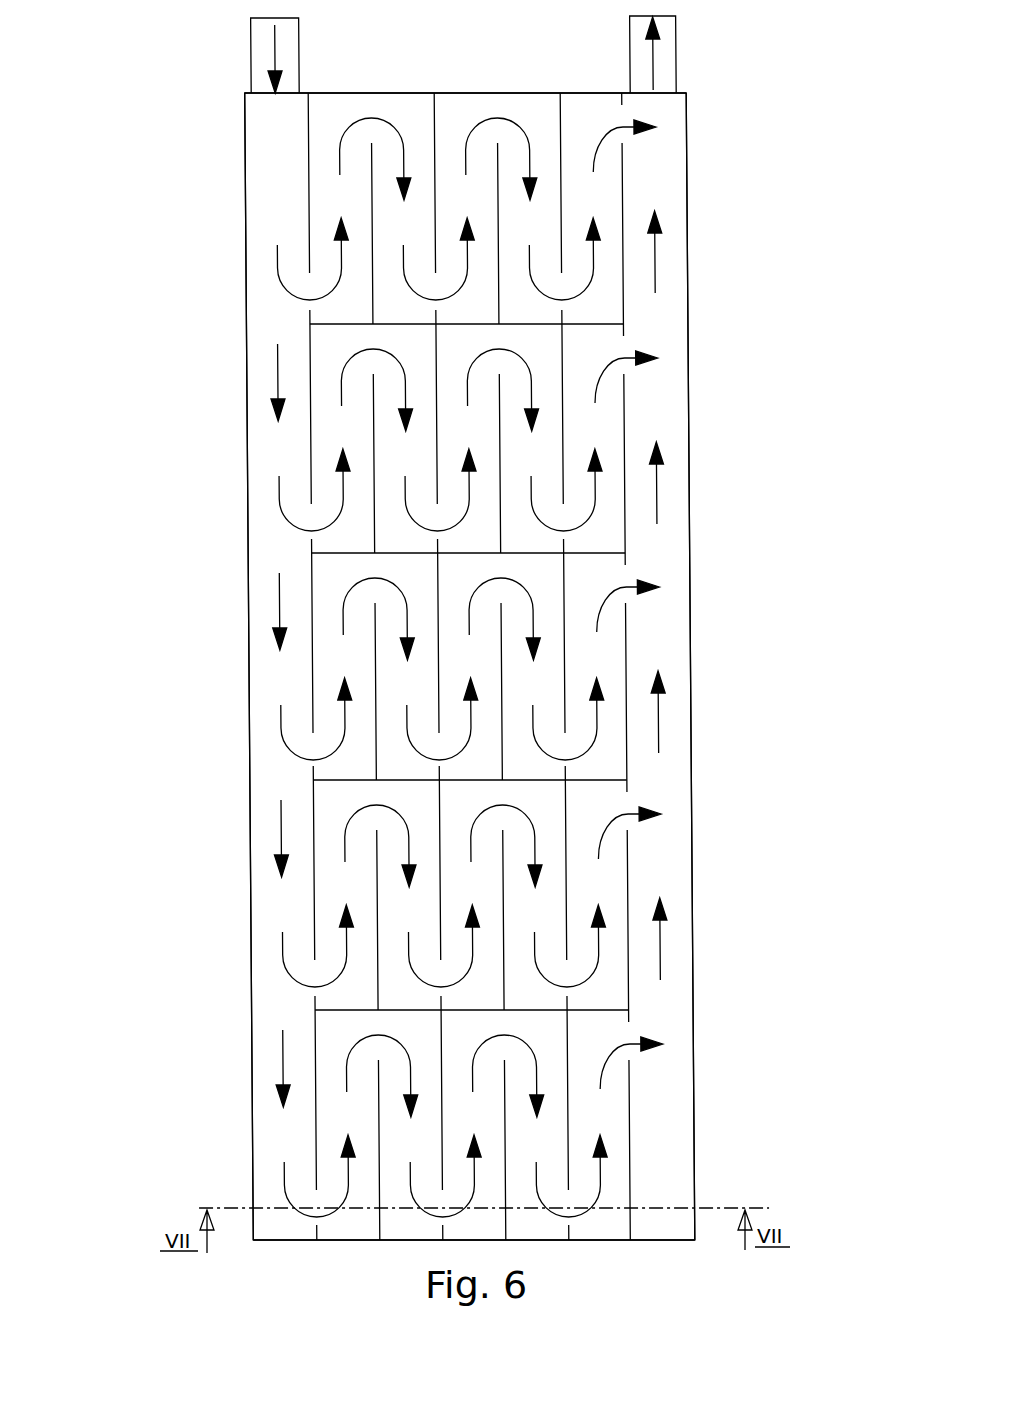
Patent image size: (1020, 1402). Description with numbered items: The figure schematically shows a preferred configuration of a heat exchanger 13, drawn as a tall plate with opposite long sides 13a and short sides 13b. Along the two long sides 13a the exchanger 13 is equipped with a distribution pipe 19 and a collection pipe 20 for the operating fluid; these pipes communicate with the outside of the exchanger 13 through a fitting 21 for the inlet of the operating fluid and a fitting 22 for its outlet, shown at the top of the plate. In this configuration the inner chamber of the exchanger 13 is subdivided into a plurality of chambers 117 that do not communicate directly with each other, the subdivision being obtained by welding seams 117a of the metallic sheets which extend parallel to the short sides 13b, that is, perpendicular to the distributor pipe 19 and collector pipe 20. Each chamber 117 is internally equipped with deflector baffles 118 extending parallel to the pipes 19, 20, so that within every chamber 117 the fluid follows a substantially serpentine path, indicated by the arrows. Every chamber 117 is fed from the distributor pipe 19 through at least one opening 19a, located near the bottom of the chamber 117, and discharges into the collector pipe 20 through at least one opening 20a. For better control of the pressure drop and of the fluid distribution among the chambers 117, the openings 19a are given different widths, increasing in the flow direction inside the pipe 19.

The exchanger 13 is at (164, 137).
The long sides 13a is at (690, 772).
The short sides 13b is at (510, 92).
The fitting 21 is at (251, 49).
The fitting 22 is at (677, 52).
The distribution pipe 19 is at (285, 440).
The openings 19a is at (310, 302).
The collection pipe 20 is at (650, 633).
The openings 20a is at (630, 356).
The chambers 117 is at (590, 190).
The welding seams 117a is at (530, 323).
The deflector baffles 118 is at (433, 210).